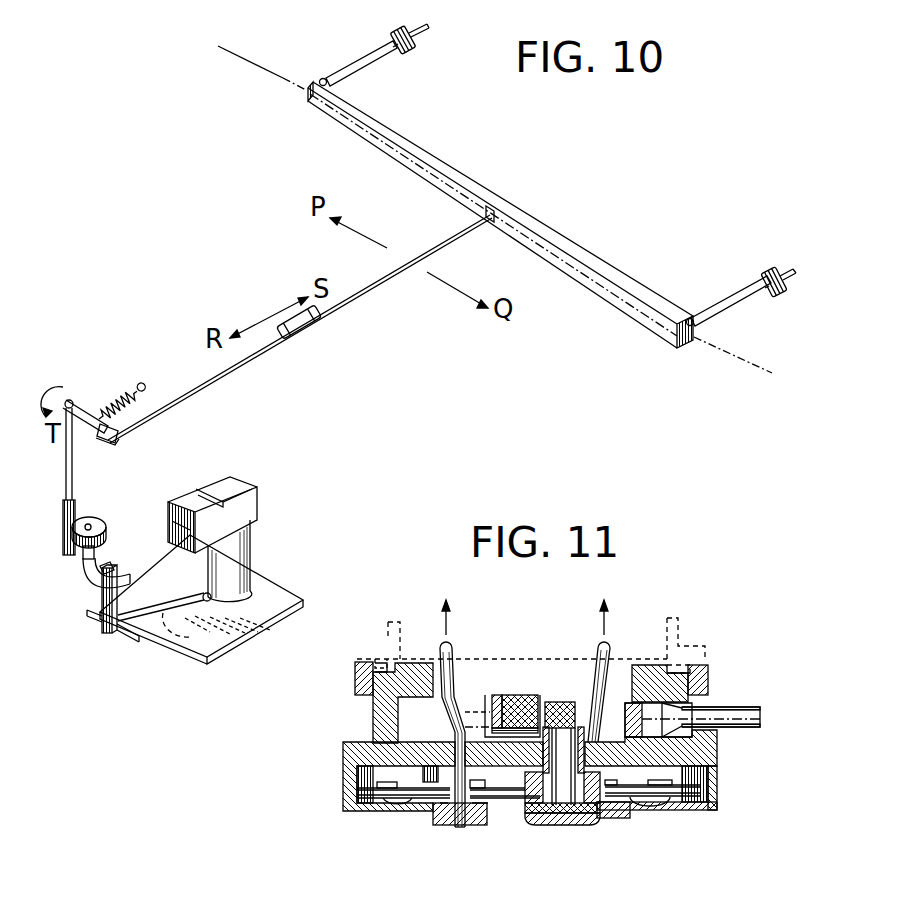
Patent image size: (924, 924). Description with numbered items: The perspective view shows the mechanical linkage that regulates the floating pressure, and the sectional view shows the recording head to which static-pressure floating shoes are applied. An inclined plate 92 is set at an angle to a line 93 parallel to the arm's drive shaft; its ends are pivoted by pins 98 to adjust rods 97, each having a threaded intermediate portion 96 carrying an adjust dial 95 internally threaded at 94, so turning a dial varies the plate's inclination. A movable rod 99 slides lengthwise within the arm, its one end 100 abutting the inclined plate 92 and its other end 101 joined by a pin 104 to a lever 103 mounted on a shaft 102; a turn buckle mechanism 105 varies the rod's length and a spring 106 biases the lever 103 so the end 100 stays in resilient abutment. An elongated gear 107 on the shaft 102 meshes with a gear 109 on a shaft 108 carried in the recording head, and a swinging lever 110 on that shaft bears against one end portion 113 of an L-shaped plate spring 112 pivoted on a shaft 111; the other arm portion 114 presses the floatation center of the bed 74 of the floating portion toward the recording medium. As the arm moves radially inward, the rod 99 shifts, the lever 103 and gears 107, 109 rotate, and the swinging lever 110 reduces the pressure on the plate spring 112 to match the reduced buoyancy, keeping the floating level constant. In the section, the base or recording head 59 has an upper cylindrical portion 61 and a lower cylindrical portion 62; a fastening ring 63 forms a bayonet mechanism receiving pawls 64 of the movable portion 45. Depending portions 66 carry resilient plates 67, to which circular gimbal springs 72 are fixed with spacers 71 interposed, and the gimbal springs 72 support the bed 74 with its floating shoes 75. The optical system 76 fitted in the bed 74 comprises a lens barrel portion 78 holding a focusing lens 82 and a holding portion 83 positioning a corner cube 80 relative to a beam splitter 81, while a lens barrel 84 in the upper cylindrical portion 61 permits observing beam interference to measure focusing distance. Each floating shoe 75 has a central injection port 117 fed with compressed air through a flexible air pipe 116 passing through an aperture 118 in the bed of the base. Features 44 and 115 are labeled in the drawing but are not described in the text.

In FIG. 11, the cover 44 is at (357, 657).
In FIG. 11, the movable portion 45 is at (700, 594).
In FIG. 11, the base 59 is at (364, 724).
In FIG. 11, the upper cylindrical portion 61 is at (373, 712).
In FIG. 11, the lower cylindrical portion 62 is at (345, 778).
In FIG. 11, the fastening ring 63 is at (355, 682).
In FIG. 11, the pawls 64 is at (382, 663).
In FIG. 11, the depending portions 66 is at (420, 784).
In FIG. 11, the resilient plate 67 is at (645, 805).
In FIG. 11, the spacer 71 is at (660, 793).
In FIG. 11, the gimbal spring 72 is at (695, 811).
In FIG. 10, the bed 74 is at (303, 598).
In FIG. 11, the bed 74 is at (508, 812).
In FIG. 11, the floating shoes 75 is at (445, 826).
In FIG. 10, the optical system 76 is at (242, 498).
In FIG. 11, the optical system 76 is at (582, 710).
In FIG. 10, the lens barrel portion 78 is at (252, 556).
In FIG. 11, the lens barrel portion 78 is at (548, 805).
In FIG. 11, the corner cube 80 is at (527, 697).
In FIG. 10, the beam splitter 81 is at (234, 484).
In FIG. 11, the focusing lens 82 is at (567, 826).
In FIG. 10, the holding portion 83 is at (172, 527).
In FIG. 11, the holding portion 83 is at (497, 697).
In FIG. 11, the lens barrel 84 is at (750, 728).
In FIG. 10, the inclined plate 92 is at (428, 158).
In FIG. 10, the line 93 is at (235, 60).
In FIG. 10, the internal thread 94 is at (404, 52).
In FIG. 10, the adjust dial 95 is at (420, 40).
In FIG. 10, the threaded intermediate portion 96 is at (398, 32).
In FIG. 10, the adjust rods 97 is at (352, 66).
In FIG. 10, the pins 98 is at (320, 81).
In FIG. 10, the movable rod 99 is at (266, 352).
In FIG. 10, the one end 100 is at (490, 222).
In FIG. 10, the other end 101 is at (116, 446).
In FIG. 10, the shaft 102 is at (66, 470).
In FIG. 10, the lever 103 is at (72, 400).
In FIG. 10, the pin 104 is at (120, 436).
In FIG. 10, the turn buckle mechanism 105 is at (312, 334).
In FIG. 10, the spring 106 is at (118, 388).
In FIG. 10, the elongated gear 107 is at (63, 530).
In FIG. 10, the shaft 108 is at (85, 560).
In FIG. 10, the gear 109 is at (90, 516).
In FIG. 10, the swinging lever 110 is at (92, 576).
In FIG. 10, the shaft 111 is at (125, 634).
In FIG. 10, the L-shaped plate spring 112 is at (102, 622).
In FIG. 10, the one end portion 113 is at (136, 578).
In FIG. 10, the other arm portion 114 is at (168, 612).
In FIG. 10, the ball end 115 is at (212, 599).
In FIG. 11, the flexible air pipe 116 is at (456, 718).
In FIG. 11, the injection port 117 is at (460, 829).
In FIG. 11, the aperture 118 is at (468, 772).